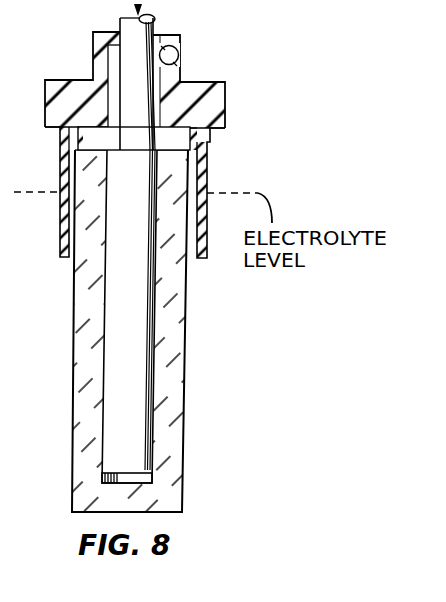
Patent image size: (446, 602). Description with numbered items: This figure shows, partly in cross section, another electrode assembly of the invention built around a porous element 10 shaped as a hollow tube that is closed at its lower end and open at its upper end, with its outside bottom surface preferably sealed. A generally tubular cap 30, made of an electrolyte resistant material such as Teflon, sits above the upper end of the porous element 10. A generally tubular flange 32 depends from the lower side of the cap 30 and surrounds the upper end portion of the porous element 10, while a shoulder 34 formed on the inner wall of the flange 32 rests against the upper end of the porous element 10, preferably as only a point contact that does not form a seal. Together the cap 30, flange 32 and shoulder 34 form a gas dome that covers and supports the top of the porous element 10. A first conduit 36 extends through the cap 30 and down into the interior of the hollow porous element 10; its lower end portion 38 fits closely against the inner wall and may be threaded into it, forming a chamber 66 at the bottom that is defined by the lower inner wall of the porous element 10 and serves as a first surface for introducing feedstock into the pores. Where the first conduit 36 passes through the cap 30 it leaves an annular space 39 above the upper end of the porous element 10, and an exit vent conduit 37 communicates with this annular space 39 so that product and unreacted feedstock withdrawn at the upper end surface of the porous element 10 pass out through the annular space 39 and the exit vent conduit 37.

The porous element 10 is at (73, 397).
The tubular cap 30 is at (93, 45).
The tubular flange 32 is at (207, 183).
The shoulder 34 is at (198, 143).
The first conduit 36 is at (155, 20).
The exit vent conduit 37 is at (178, 58).
The lower end portion 38 is at (110, 292).
The annular space 39 is at (106, 73).
The chamber 66 is at (150, 478).